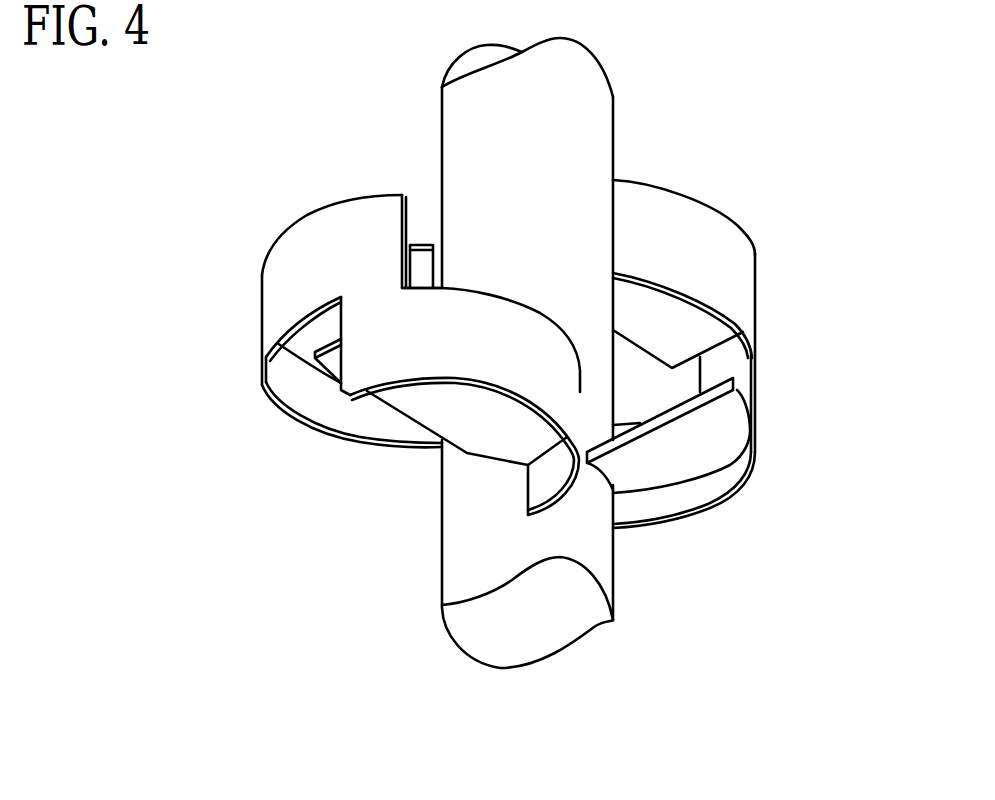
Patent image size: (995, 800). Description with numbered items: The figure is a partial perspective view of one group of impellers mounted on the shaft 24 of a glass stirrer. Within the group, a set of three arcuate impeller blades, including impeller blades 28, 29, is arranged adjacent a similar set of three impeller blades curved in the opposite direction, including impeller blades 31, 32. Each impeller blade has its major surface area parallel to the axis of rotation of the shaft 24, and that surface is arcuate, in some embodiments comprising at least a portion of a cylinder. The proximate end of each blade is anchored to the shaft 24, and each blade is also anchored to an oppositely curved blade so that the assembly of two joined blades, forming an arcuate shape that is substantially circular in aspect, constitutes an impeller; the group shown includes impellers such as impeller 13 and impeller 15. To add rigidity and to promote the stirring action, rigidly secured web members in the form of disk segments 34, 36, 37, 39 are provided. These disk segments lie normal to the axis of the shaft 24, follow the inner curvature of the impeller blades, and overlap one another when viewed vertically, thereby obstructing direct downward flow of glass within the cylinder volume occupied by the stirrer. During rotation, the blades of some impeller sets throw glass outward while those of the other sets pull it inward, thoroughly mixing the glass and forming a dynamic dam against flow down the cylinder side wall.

The impeller 13 is at (800, 225).
The impeller 15 is at (185, 356).
The shaft 24 is at (593, 555).
The impeller blade 28 is at (675, 188).
The impeller blade 29 is at (296, 226).
The impeller blade 31 is at (653, 532).
The impeller blade 32 is at (490, 292).
The disk segment 34 is at (421, 245).
The disk segment 36 is at (694, 325).
The disk segment 37 is at (492, 433).
The disk segment 39 is at (675, 462).